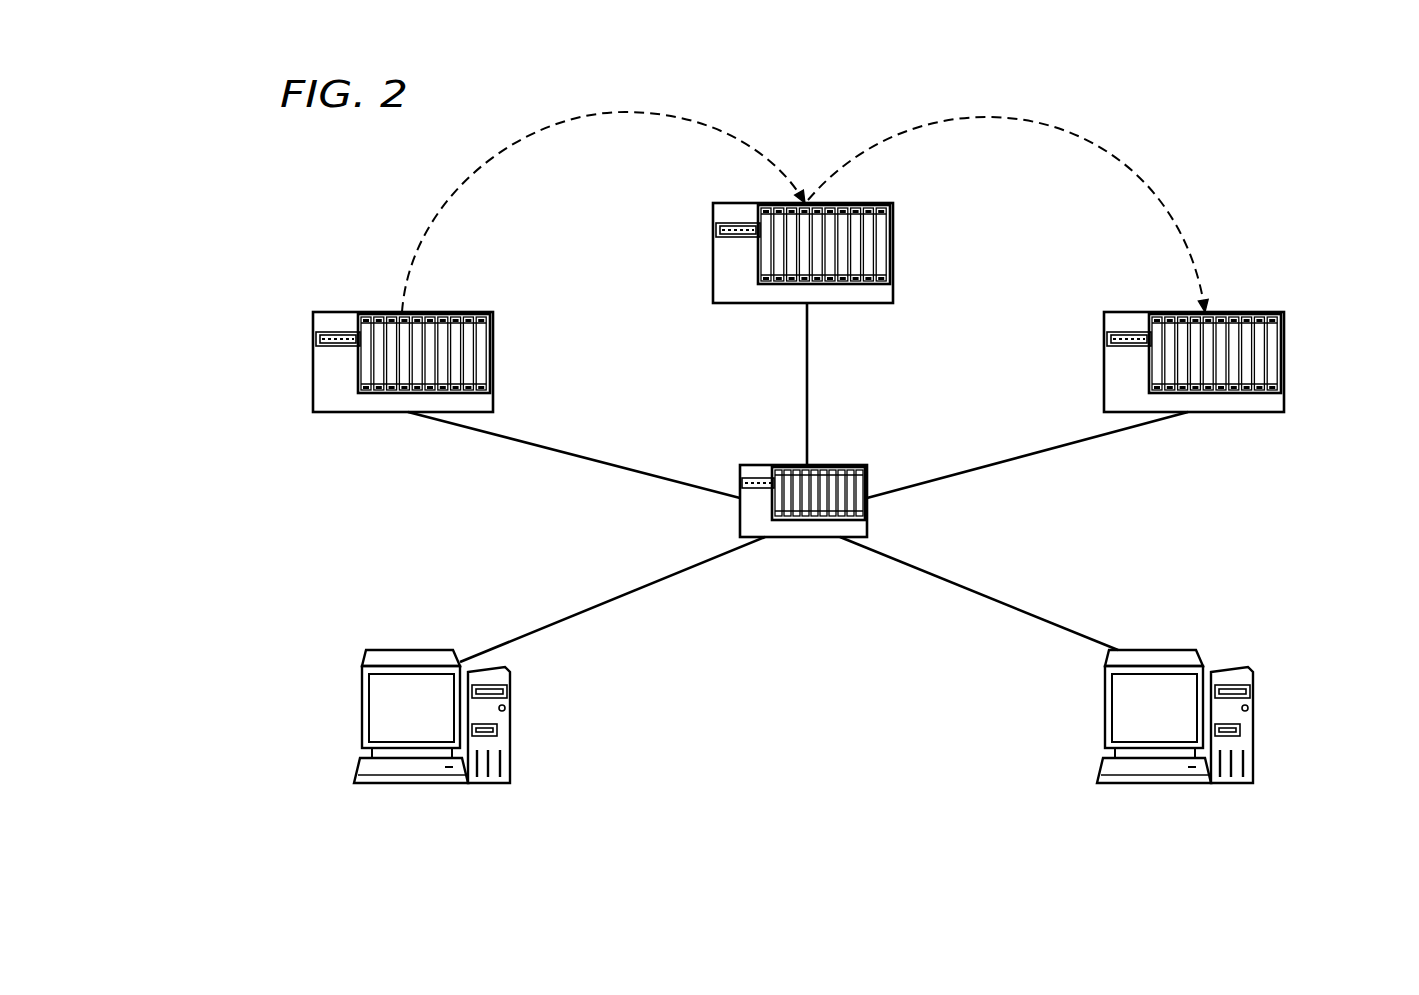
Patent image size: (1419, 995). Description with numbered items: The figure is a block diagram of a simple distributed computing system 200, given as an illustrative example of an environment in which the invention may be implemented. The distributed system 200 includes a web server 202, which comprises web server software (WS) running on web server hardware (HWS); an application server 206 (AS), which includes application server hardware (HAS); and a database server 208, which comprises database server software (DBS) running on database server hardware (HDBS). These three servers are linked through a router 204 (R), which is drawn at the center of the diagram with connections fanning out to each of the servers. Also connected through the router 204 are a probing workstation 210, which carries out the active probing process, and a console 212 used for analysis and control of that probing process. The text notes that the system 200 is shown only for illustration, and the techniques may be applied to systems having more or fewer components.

The distributed system 200 is at (1284, 172).
The web server 202 is at (494, 355).
The router 204 is at (798, 465).
The application server 206 is at (894, 253).
The database server 208 is at (1103, 361).
The probing workstation 210 is at (361, 702).
The console 212 is at (1255, 727).